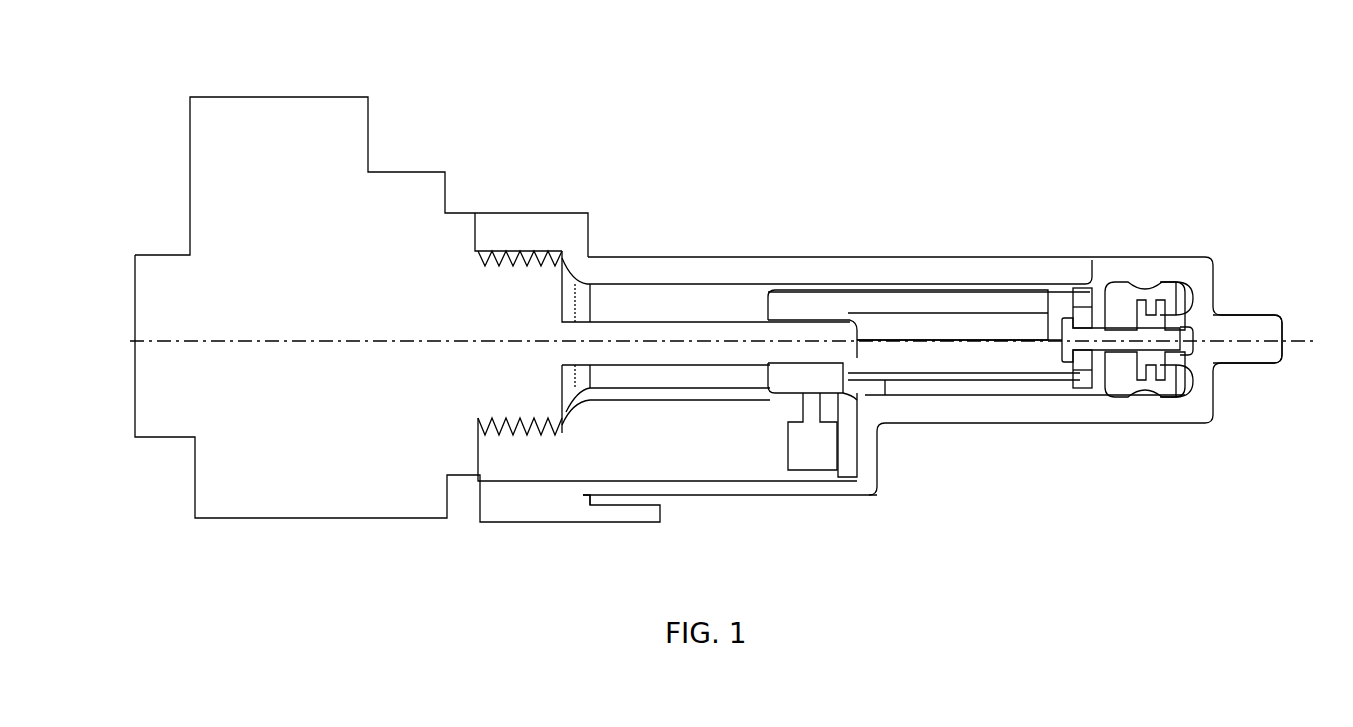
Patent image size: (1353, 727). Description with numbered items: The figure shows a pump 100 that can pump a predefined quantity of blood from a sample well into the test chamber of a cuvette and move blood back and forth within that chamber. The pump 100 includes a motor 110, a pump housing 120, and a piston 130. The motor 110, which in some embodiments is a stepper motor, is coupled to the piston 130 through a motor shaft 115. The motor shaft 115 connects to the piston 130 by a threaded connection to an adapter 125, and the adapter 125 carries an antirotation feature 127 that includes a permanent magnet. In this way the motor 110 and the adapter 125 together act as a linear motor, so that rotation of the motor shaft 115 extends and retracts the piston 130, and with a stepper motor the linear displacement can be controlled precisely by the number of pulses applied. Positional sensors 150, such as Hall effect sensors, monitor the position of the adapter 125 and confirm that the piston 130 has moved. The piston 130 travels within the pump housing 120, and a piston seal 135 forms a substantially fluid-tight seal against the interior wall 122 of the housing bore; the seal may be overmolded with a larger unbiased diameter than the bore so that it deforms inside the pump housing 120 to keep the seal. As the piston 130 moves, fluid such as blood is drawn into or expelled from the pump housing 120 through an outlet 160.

The pump 100 is at (1149, 74).
The motor 110 is at (190, 150).
The motor shaft 115 is at (649, 341).
The pump housing 120 is at (925, 270).
The interior wall 122 is at (1092, 283).
The adapter 125 is at (790, 298).
The antirotation feature 127 is at (775, 417).
The piston 130 is at (1098, 360).
The piston seal 135 is at (1150, 283).
The positional sensors 150 is at (848, 493).
The outlet 160 is at (1283, 340).